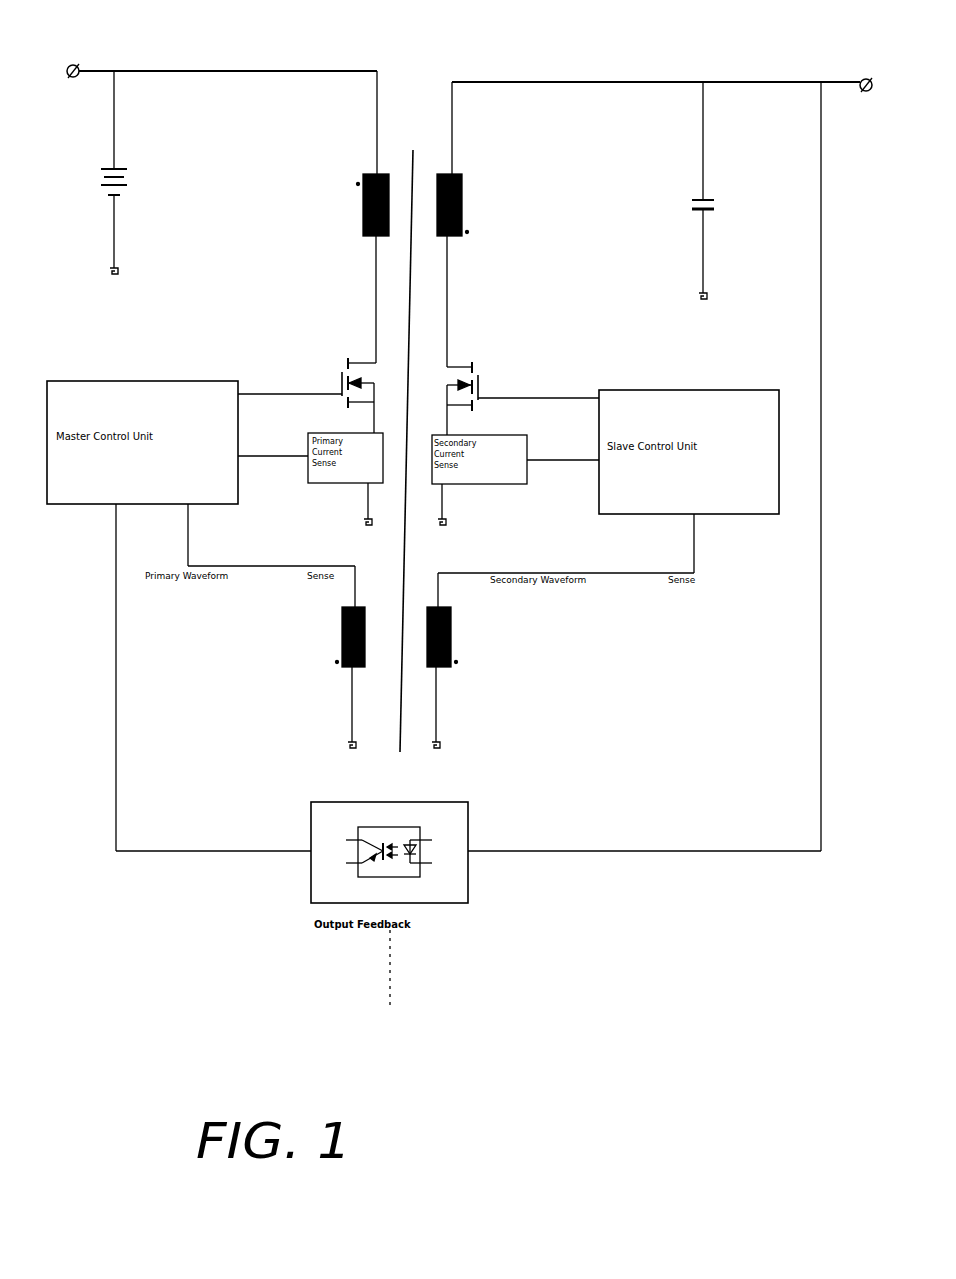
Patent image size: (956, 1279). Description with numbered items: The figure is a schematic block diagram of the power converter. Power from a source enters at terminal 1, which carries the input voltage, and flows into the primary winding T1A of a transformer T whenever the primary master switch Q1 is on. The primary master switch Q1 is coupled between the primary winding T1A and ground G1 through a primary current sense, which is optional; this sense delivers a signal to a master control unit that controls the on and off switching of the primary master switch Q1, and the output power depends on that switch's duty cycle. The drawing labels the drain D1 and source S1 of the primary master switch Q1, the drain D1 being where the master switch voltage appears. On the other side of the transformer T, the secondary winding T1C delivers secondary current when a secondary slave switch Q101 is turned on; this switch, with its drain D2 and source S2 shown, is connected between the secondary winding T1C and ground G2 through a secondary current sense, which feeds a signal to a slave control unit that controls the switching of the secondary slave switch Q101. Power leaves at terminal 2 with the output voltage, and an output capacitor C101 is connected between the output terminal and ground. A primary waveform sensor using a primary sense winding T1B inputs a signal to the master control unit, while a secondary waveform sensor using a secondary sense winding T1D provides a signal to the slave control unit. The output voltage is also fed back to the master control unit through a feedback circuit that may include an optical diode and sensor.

The terminal 1 is at (128, 70).
The terminal 2 is at (662, 433).
The transformer T is at (403, 120).
The primary winding T1A is at (359, 164).
The primary sense winding T1B is at (363, 641).
The secondary winding T1C is at (466, 171).
The secondary sense winding T1D is at (451, 642).
The primary master switch Q1 is at (307, 334).
The secondary slave switch Q101 is at (523, 335).
The drain D1 is at (353, 299).
The ground G1 is at (290, 385).
The source of Q1 S1 is at (346, 415).
The drain D2 is at (471, 301).
The ground G2 is at (538, 391).
The source of Q101 S2 is at (469, 418).
The output capacitor C101 is at (716, 190).